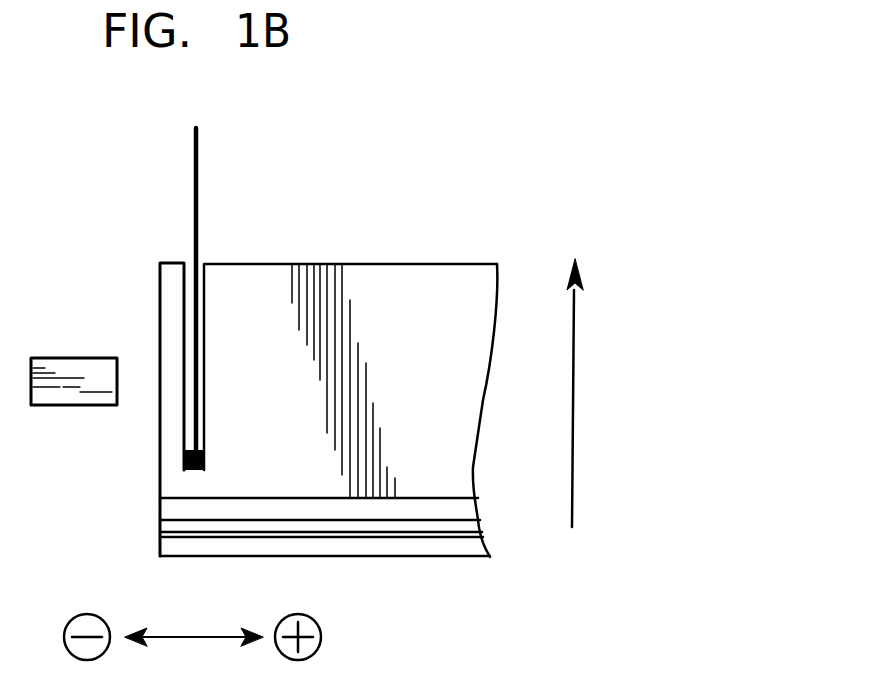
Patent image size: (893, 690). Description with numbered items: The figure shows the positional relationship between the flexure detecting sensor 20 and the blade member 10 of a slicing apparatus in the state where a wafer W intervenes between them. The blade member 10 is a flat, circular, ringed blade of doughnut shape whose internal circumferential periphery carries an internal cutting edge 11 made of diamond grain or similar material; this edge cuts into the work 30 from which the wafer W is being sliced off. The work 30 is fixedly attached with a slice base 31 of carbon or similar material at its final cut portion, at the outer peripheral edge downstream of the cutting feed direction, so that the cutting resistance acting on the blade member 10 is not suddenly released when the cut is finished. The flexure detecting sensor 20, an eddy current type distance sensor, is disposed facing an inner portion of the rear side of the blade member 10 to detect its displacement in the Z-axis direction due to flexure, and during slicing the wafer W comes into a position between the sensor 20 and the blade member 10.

The wafer W is at (166, 297).
The blade member 10 is at (199, 222).
The internal cutting edge 11 is at (198, 470).
The flexure detecting sensor 20 is at (75, 375).
The work 30 is at (380, 284).
The slice base 31 is at (407, 540).